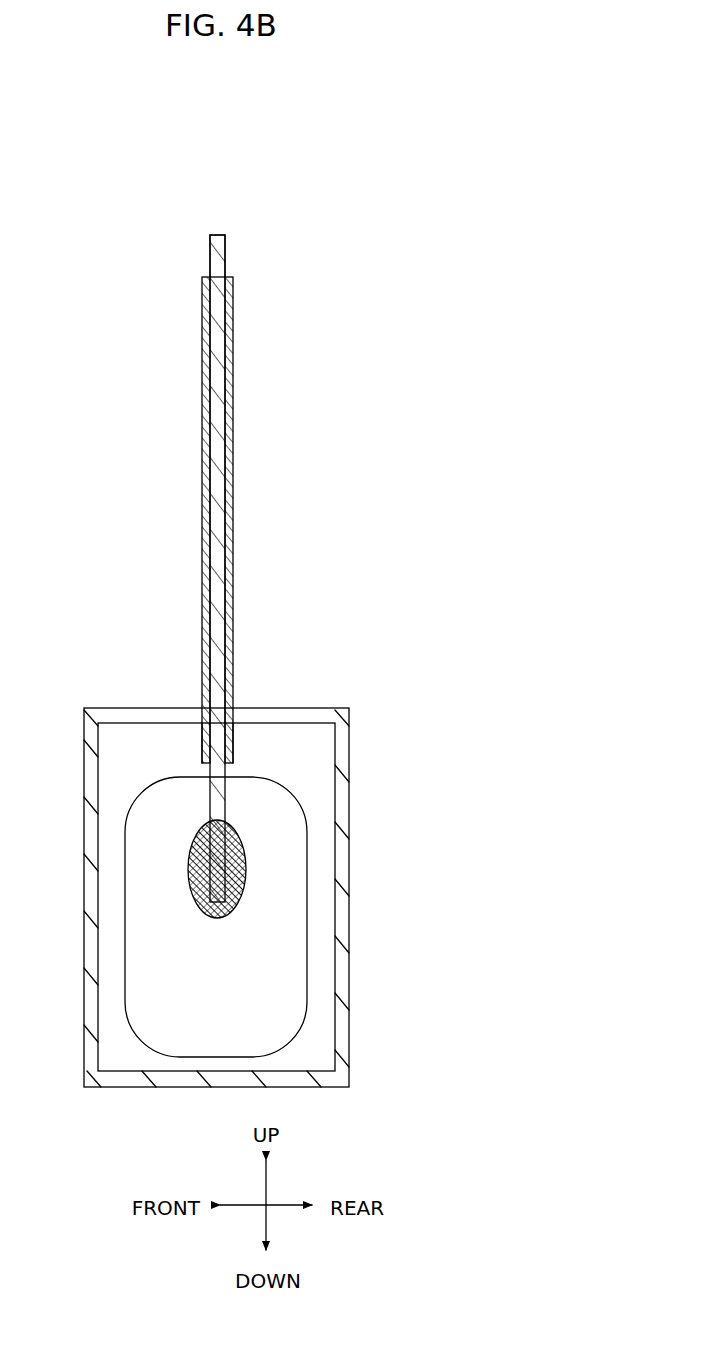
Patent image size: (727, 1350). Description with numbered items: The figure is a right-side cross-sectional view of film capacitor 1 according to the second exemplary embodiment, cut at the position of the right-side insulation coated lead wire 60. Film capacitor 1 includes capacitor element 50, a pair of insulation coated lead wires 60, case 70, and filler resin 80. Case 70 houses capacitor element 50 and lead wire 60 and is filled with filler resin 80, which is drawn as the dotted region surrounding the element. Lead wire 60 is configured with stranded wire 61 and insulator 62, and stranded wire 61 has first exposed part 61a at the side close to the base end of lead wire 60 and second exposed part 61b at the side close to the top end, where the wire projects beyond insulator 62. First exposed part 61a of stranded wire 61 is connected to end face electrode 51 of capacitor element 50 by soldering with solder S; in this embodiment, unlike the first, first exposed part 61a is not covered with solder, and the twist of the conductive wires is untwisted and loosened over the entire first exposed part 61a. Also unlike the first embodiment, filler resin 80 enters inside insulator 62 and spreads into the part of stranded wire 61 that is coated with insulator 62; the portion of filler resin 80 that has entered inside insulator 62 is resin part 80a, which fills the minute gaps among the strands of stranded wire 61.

The film capacitor 1 is at (95, 682).
The capacitor element 50 is at (132, 1028).
The end face electrode 51 is at (288, 992).
The insulation coated lead wire 60 is at (304, 547).
The stranded wire 61 is at (216, 562).
The first exposed part 61a is at (206, 820).
The second exposed part 61b is at (227, 258).
The insulator 62 is at (238, 372).
The case 70 is at (353, 883).
The filler resin 80 is at (177, 755).
The resin part 80a is at (228, 717).
The solder S is at (243, 890).